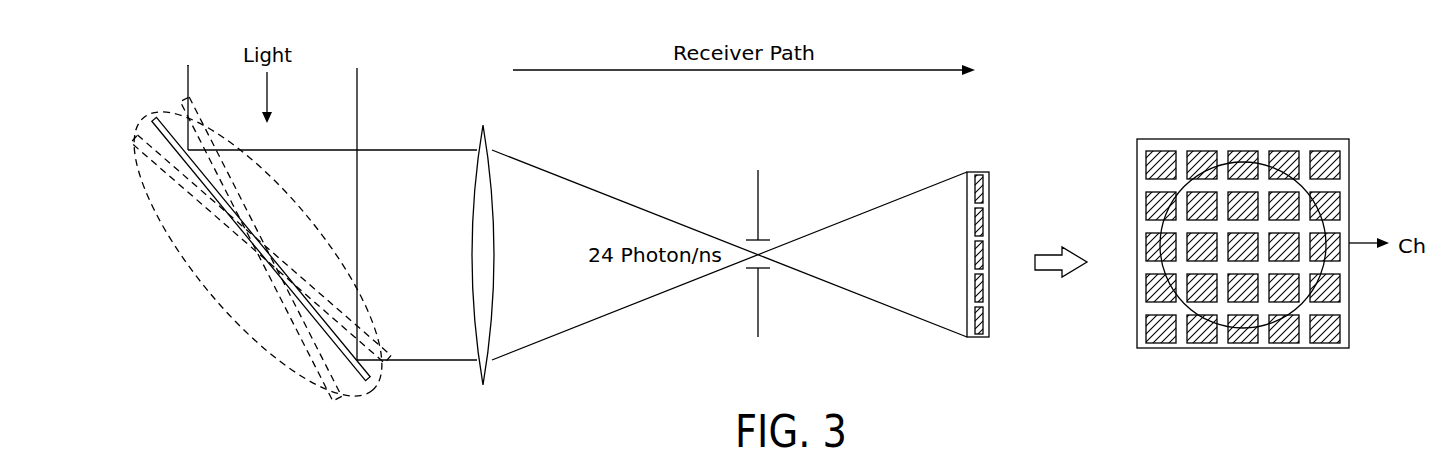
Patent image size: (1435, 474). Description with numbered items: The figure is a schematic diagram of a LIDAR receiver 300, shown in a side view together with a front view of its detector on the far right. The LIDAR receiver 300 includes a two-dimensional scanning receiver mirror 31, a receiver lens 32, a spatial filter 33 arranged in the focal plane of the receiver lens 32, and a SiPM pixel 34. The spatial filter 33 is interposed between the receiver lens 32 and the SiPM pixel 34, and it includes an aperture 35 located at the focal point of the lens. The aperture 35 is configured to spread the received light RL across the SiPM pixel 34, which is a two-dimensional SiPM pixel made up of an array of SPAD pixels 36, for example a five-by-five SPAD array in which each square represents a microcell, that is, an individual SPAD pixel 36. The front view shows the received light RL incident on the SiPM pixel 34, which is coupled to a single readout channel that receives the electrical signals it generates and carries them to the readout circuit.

The LIDAR receiver 300 is at (168, 44).
The 2D-scanning receiver mirror 31 is at (160, 118).
The receiver lens 32 is at (484, 124).
The spatial filter 33 is at (758, 184).
The SiPM pixel 34 is at (978, 171).
The aperture 35 is at (779, 245).
The SPAD pixel 36 is at (1324, 152).
The received light RL is at (1268, 162).